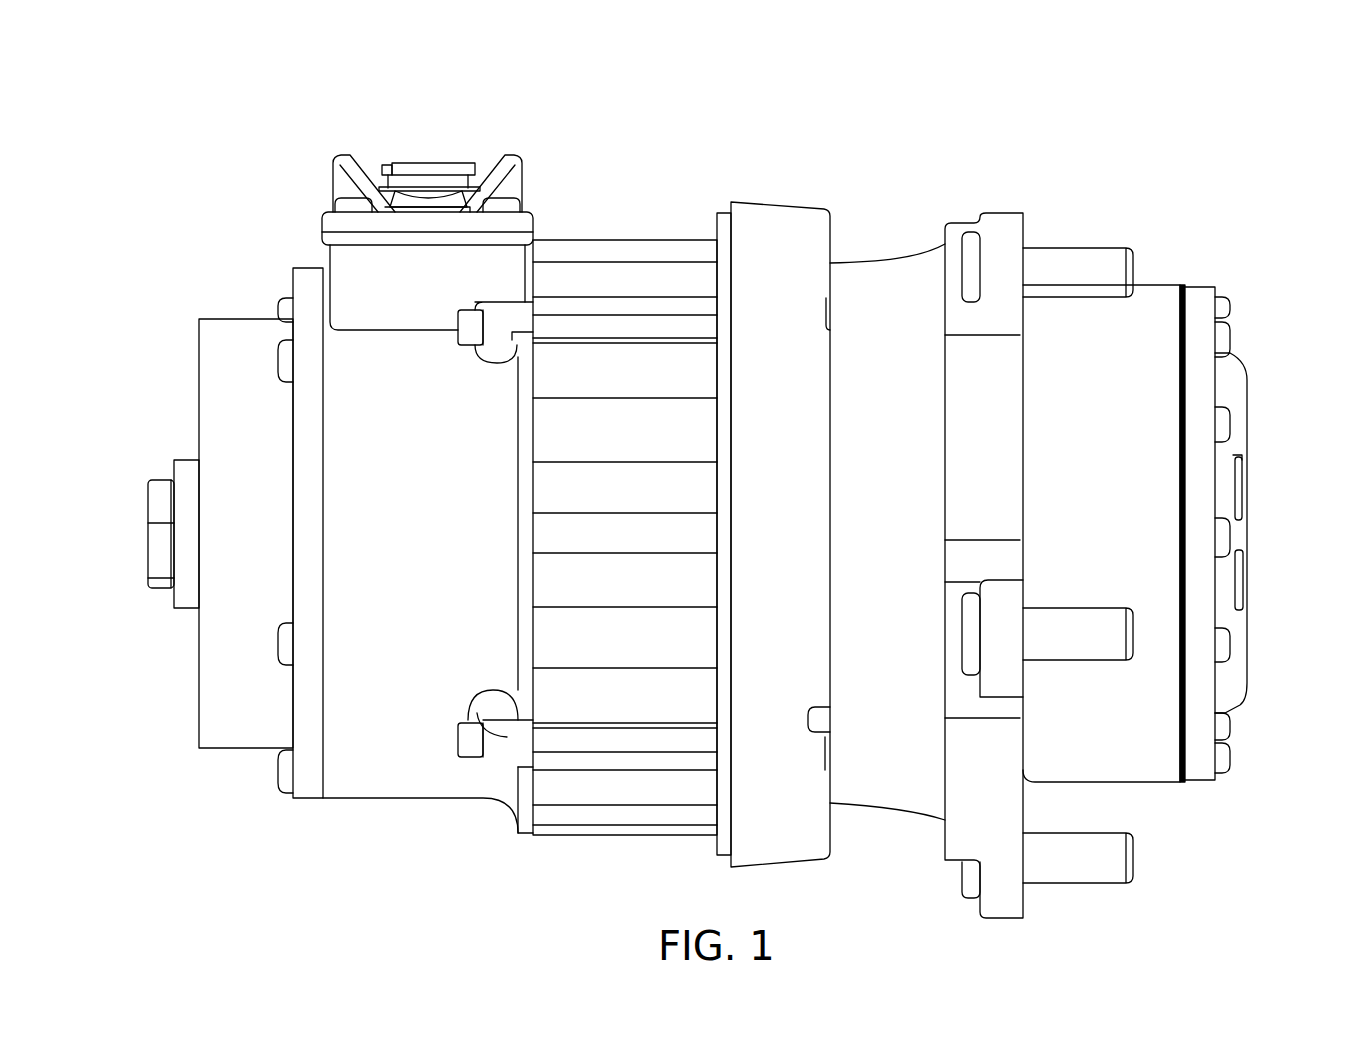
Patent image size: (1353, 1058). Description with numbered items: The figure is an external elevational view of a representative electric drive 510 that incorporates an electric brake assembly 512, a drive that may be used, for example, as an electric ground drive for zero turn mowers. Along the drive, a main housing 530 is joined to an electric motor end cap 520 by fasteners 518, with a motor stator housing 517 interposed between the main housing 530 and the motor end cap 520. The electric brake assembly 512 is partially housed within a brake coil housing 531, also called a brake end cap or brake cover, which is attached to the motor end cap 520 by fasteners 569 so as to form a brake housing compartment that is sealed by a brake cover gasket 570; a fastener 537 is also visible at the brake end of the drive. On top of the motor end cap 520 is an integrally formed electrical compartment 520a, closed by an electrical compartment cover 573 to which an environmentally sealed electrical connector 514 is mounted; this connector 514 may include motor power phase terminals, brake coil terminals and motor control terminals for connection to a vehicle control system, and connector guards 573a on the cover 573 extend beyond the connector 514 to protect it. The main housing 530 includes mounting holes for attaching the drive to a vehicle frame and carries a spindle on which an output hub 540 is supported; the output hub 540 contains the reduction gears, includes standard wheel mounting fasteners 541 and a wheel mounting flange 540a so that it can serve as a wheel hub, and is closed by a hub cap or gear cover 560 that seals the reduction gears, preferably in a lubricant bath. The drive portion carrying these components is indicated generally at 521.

The electric drive 510 is at (158, 108).
The electric brake assembly 512 is at (158, 372).
The electrical connector 514 is at (435, 163).
The motor stator housing 517 is at (625, 240).
The fasteners 518 is at (458, 740).
The electric motor end cap 520 is at (442, 467).
The electrical compartment 520a is at (452, 292).
The compressor unit 521 is at (638, 145).
The main housing 530 is at (798, 254).
The brake coil housing 531 is at (267, 432).
The fastener 537 is at (160, 479).
The output hub 540 is at (1127, 398).
The wheel mounting flange 540a is at (1025, 222).
The wheel mounting fasteners 541 is at (1135, 858).
The gear cover 560 is at (1248, 420).
The fasteners 569 is at (283, 777).
The brake cover gasket 570 is at (320, 800).
The electrical compartment cover 573 is at (307, 178).
The connector guards 573a is at (512, 158).